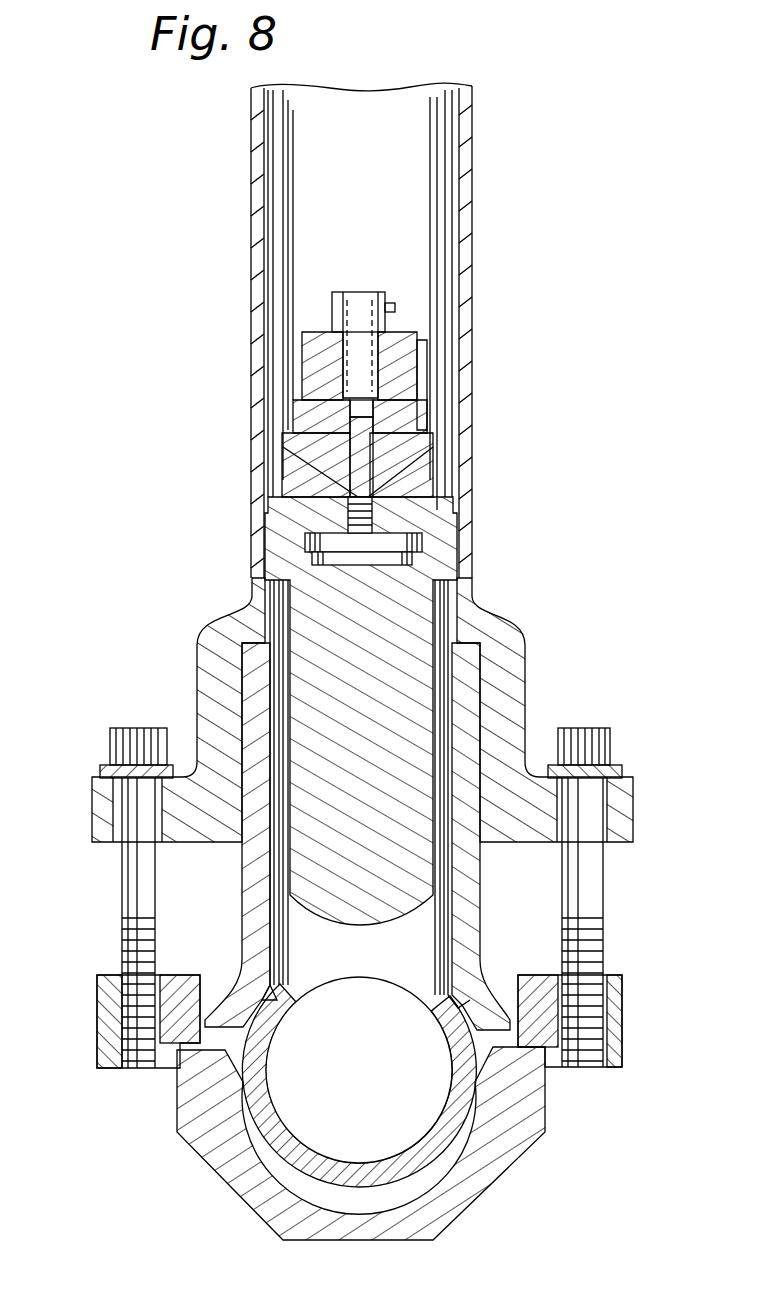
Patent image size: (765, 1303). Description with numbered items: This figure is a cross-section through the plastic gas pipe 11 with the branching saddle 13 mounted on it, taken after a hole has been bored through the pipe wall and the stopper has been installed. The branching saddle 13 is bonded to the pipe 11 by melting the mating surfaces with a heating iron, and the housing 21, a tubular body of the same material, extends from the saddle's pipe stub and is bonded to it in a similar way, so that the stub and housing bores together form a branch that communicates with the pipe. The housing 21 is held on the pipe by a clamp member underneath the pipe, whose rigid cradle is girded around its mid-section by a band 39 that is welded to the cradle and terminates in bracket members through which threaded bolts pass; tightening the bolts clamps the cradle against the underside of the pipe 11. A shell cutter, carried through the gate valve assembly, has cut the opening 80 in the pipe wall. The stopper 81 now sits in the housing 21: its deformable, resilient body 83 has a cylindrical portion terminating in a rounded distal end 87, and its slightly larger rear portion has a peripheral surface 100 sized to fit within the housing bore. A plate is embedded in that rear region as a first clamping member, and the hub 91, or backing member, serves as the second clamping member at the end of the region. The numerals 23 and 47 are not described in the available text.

The plastic gas pipe 11 is at (457, 1097).
The branching saddle 13 is at (490, 963).
The housing 21 is at (512, 617).
The tube 23 is at (474, 200).
The band 39 is at (547, 1090).
The bolt 47 is at (113, 893).
The opening 80 is at (283, 990).
The stopper 81 is at (455, 479).
The resilient body 83 is at (283, 898).
The rounded distal end 87 is at (327, 925).
The hub 91 is at (416, 332).
The peripheral surface 100 is at (263, 575).